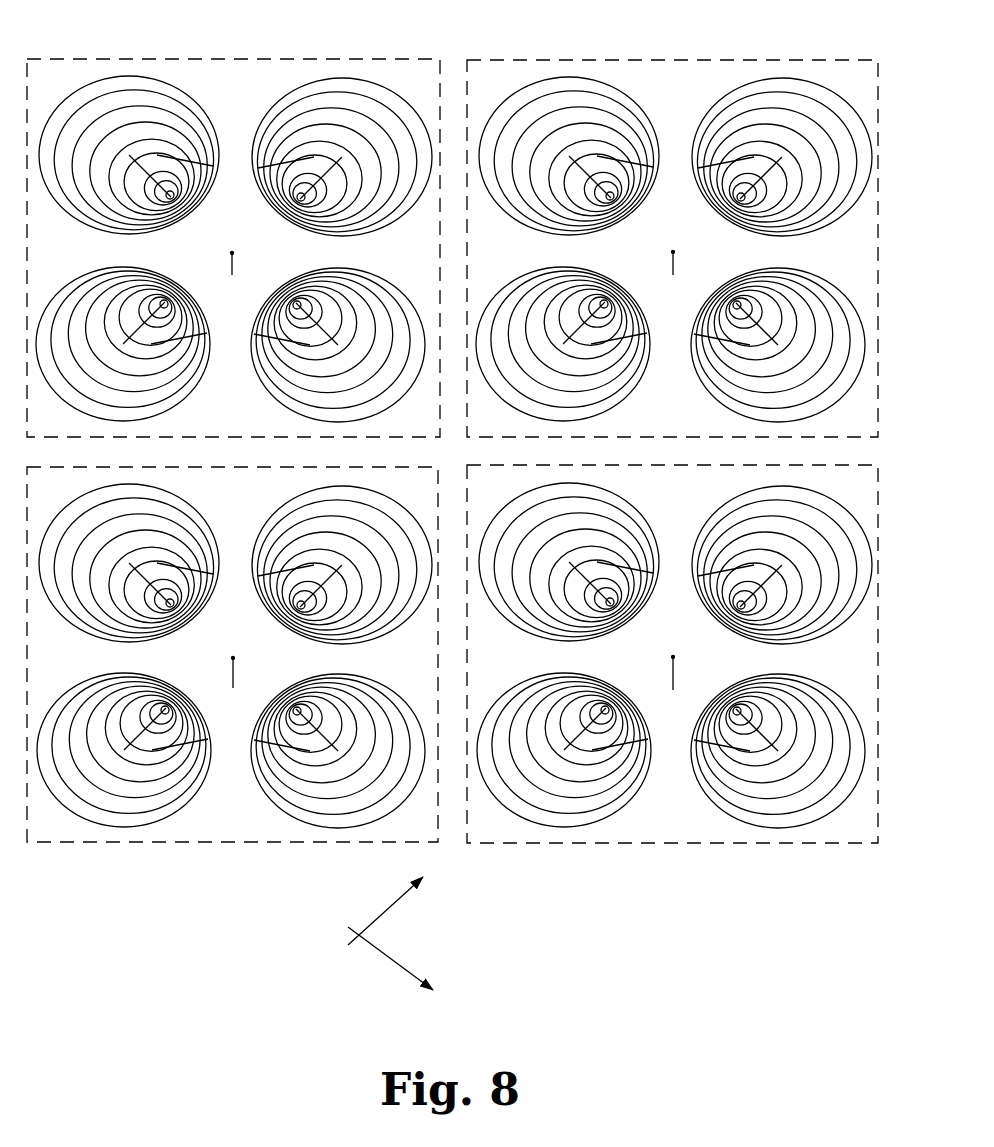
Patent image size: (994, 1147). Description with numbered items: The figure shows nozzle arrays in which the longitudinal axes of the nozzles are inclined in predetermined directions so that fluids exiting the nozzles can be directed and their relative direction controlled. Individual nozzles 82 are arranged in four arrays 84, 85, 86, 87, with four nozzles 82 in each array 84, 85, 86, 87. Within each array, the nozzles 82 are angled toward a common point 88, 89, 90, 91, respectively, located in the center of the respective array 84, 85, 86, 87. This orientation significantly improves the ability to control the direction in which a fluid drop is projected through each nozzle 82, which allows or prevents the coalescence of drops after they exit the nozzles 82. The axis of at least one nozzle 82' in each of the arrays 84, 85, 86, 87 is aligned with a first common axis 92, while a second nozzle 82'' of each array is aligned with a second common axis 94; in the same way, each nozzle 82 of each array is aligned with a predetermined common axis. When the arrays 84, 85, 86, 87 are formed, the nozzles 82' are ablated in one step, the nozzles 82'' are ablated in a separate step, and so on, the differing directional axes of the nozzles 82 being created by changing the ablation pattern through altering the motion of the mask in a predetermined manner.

The nozzle 82 is at (523, 425).
The first nozzle 82' is at (347, 332).
The second nozzle 82'' is at (343, 540).
The array 84 is at (182, 57).
The array 85 is at (623, 57).
The array 86 is at (243, 843).
The array 87 is at (720, 843).
The common point 88 is at (235, 282).
The common point 89 is at (675, 282).
The common point 90 is at (237, 687).
The common point 91 is at (675, 689).
The first common axis 92 is at (382, 955).
The second common axis 94 is at (387, 908).